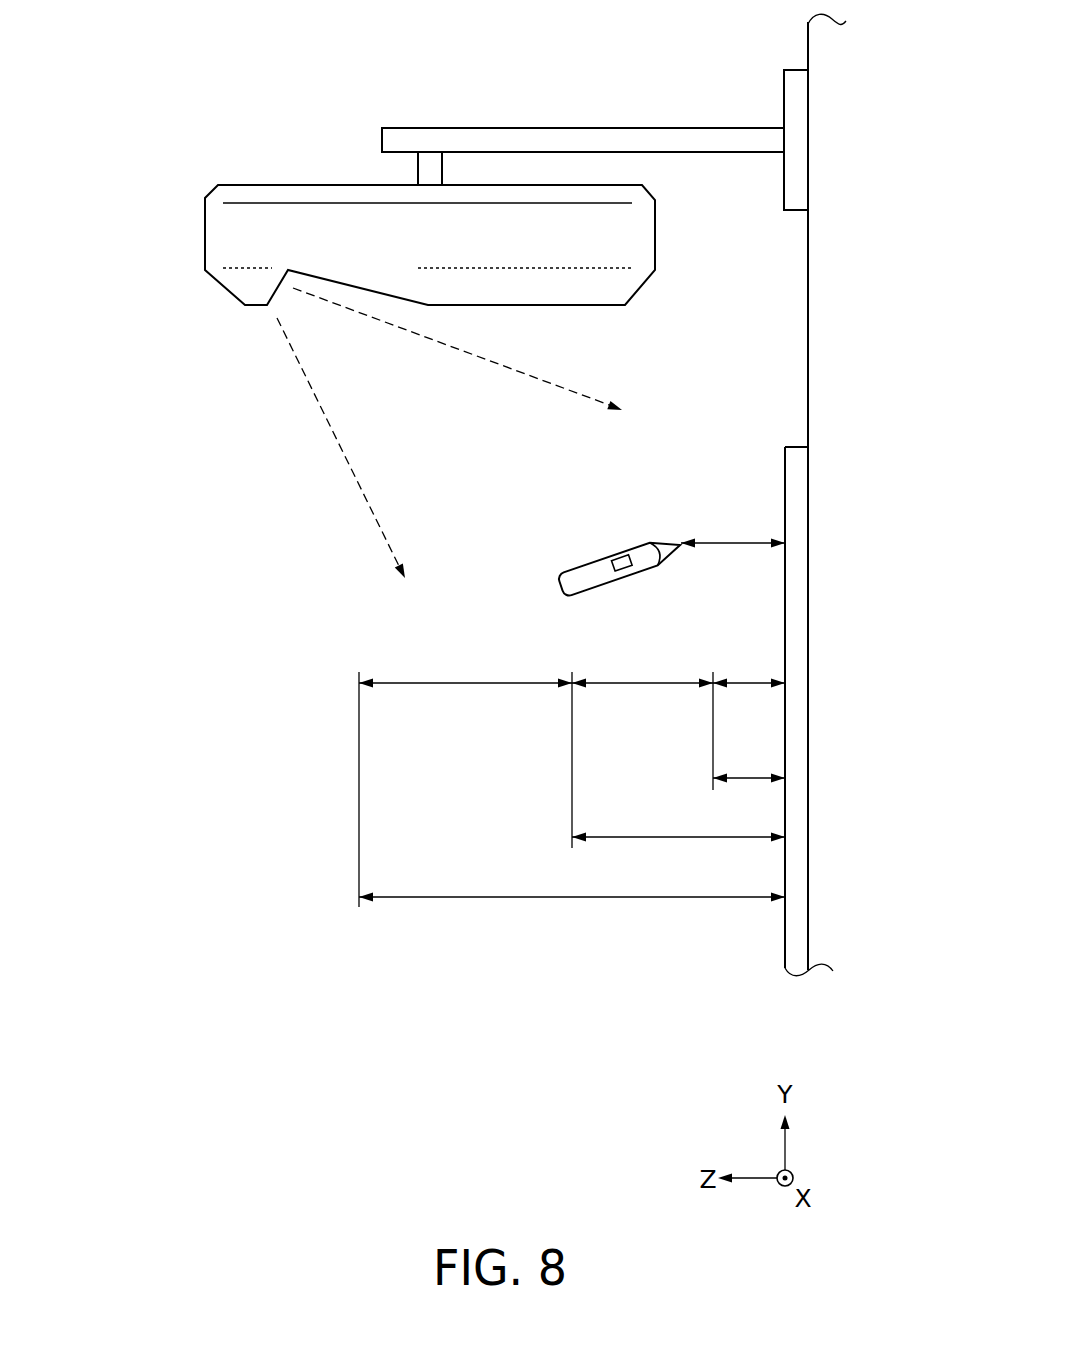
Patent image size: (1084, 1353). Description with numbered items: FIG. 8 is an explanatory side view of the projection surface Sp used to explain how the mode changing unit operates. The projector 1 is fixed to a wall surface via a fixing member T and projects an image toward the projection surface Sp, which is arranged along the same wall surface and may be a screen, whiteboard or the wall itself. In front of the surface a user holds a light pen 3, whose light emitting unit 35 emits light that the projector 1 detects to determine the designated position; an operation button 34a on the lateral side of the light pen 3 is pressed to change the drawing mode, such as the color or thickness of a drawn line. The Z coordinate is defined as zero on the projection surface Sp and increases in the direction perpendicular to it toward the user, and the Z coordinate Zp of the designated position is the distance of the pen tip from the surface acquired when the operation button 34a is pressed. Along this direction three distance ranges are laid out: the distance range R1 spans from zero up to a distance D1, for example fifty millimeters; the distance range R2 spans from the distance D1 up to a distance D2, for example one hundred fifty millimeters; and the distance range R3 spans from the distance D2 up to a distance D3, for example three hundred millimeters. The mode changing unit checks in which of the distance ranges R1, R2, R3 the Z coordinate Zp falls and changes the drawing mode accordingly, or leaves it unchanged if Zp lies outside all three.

The projector 1 is at (209, 240).
The fixing member T is at (658, 129).
The light pen 3 is at (600, 531).
The operation button 34a is at (617, 556).
The light emitting unit 35 is at (648, 543).
The projection surface Sp is at (783, 458).
The Z coordinate of the designated position Zp is at (733, 526).
The distance range R1 is at (749, 669).
The distance range R2 is at (642, 669).
The distance range R3 is at (465, 669).
The distance D1 is at (749, 763).
The distance D2 is at (678, 822).
The distance D3 is at (572, 882).